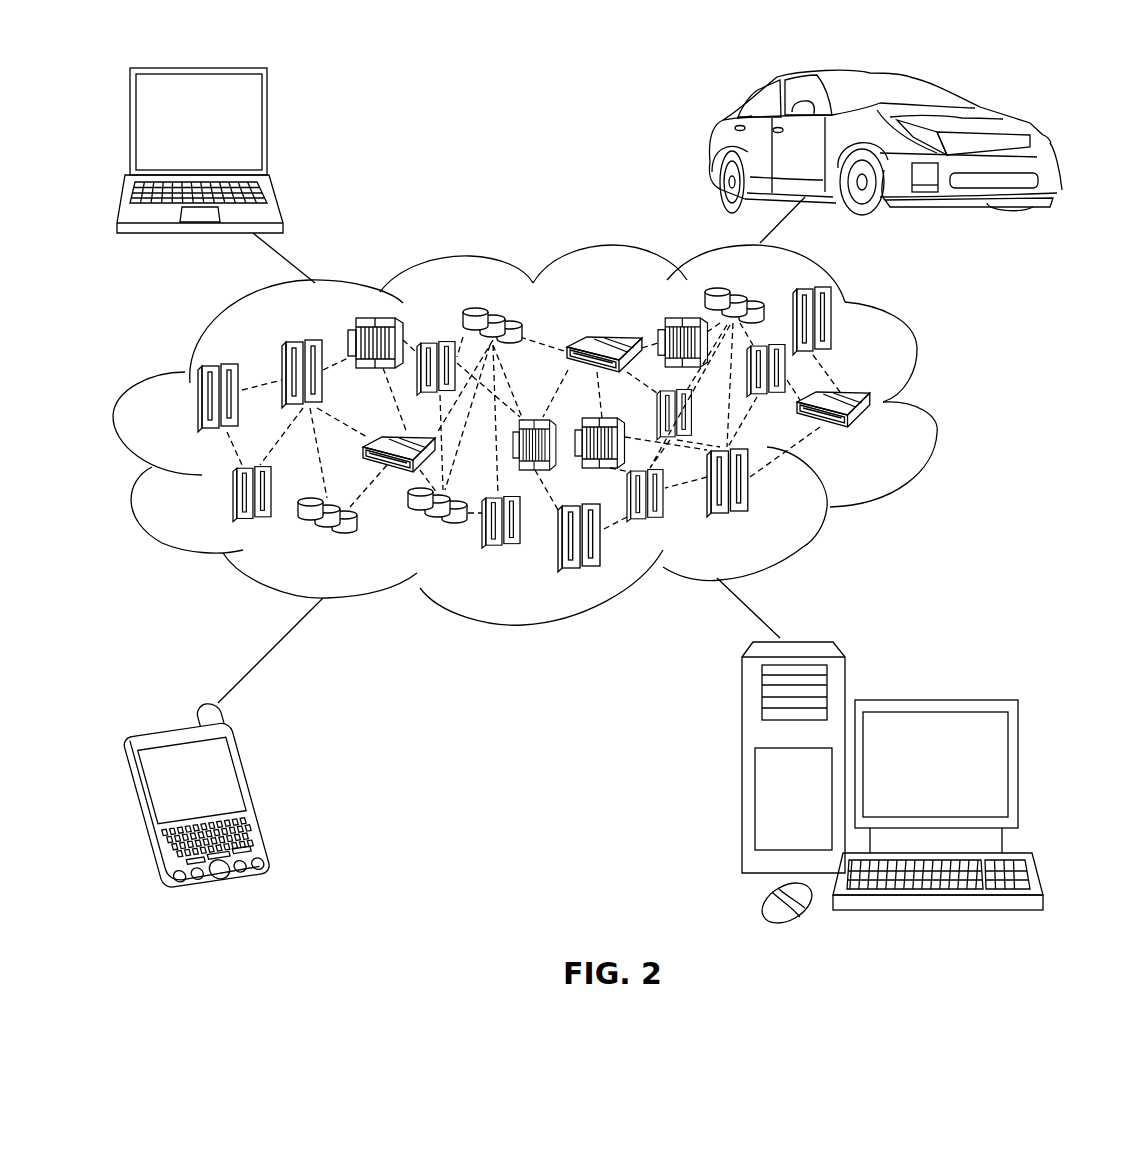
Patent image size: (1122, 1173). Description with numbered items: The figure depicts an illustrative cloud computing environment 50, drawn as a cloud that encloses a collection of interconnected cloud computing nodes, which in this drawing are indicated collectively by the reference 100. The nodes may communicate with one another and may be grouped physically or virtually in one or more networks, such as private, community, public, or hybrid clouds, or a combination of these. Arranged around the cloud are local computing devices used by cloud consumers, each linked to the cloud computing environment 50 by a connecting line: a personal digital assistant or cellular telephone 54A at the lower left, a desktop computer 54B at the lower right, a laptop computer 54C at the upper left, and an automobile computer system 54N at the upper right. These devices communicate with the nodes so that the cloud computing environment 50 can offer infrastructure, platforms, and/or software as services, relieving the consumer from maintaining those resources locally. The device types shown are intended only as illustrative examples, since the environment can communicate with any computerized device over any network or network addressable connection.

The cloud computing environment 50 is at (933, 407).
The cloud computing nodes 100 is at (873, 438).
The personal digital assistant or cellular telephone 54A is at (257, 792).
The desktop computer 54B is at (932, 698).
The laptop computer 54C is at (271, 130).
The automobile computer system 54N is at (712, 147).